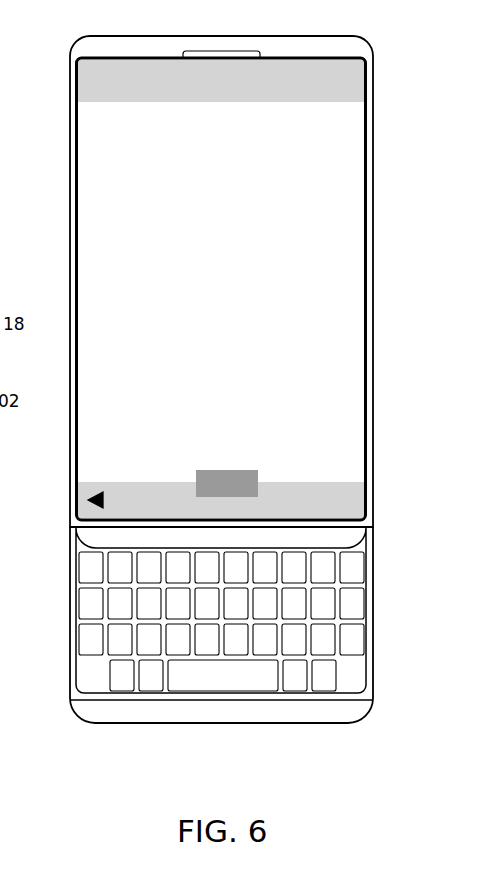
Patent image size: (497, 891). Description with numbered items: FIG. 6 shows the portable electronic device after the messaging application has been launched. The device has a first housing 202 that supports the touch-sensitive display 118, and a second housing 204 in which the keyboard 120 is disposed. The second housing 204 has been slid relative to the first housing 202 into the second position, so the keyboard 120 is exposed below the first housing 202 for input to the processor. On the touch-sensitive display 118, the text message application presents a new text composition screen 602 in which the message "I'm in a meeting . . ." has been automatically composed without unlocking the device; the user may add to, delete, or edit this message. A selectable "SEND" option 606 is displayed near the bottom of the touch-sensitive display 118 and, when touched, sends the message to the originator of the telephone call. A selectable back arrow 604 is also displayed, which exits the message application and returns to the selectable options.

The touch-sensitive display 118 is at (352, 195).
The keyboard 120 is at (349, 596).
The first housing 202 is at (374, 256).
The second housing 204 is at (375, 672).
The new text composition screen 602 is at (83, 128).
The back arrow 604 is at (90, 496).
The "SEND" option 606 is at (247, 482).